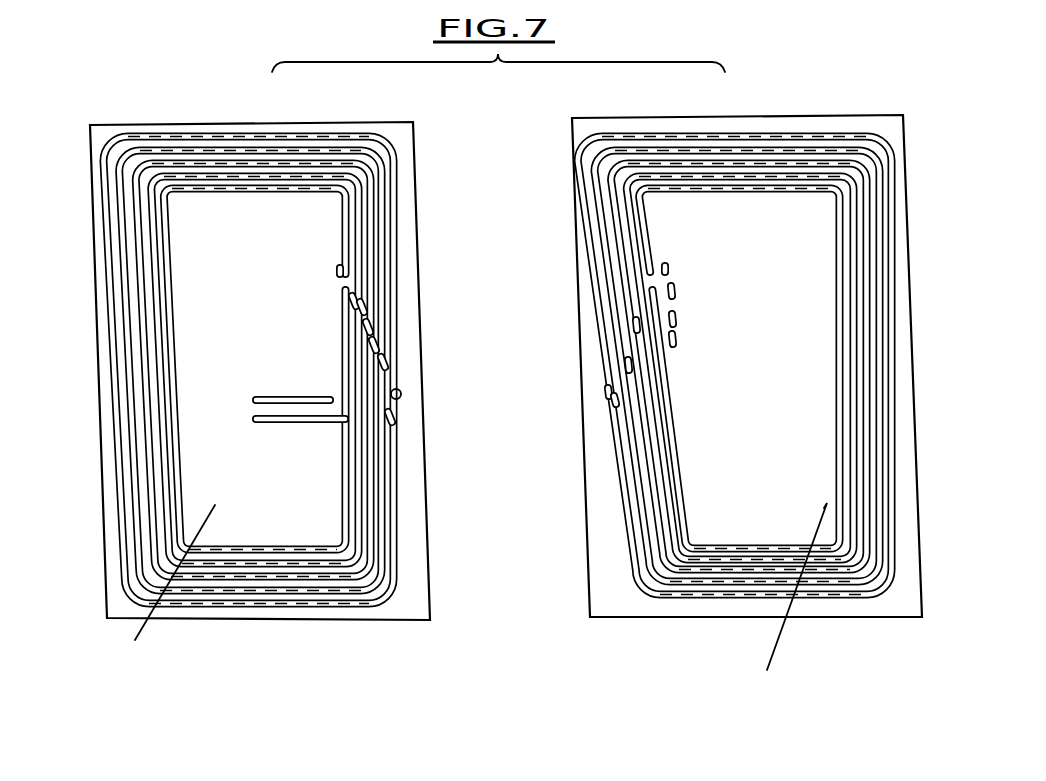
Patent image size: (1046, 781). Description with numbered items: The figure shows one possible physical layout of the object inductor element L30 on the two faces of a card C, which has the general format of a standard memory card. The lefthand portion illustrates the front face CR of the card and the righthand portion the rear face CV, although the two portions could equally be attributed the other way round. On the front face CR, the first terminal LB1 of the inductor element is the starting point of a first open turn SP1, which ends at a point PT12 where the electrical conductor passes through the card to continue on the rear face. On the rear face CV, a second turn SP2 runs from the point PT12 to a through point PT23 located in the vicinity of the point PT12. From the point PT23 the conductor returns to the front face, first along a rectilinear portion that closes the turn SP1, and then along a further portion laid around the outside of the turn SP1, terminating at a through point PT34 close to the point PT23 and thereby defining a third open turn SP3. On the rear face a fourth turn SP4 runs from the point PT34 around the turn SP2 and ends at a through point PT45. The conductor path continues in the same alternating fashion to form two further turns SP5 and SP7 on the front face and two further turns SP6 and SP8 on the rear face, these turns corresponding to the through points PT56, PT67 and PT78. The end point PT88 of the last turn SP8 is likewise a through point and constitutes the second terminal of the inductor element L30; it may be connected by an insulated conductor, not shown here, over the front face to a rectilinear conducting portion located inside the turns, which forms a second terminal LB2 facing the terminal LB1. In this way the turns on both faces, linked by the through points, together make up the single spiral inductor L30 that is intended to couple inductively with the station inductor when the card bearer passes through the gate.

The card C is at (152, 121).
The object inductor element L30 is at (405, 205).
The through point PT12 is at (333, 266).
The through point PT23 is at (349, 294).
The through point PT34 is at (366, 306).
The through point PT45 is at (370, 326).
The through point PT56 is at (374, 348).
The through point PT67 is at (386, 364).
The through point PT78 is at (401, 394).
The end through point PT88 is at (397, 417).
The first terminal LB1 is at (262, 423).
The second terminal LB2 is at (262, 396).
The first turn SP1 is at (352, 510).
The second turn SP2 is at (664, 504).
The third turn SP3 is at (307, 570).
The fourth turn SP4 is at (733, 567).
The fifth turn SP5 is at (237, 578).
The sixth turn SP6 is at (672, 578).
The seventh turn SP7 is at (393, 576).
The eighth turn SP8 is at (845, 592).
The front face CR is at (187, 600).
The rear face CV is at (827, 602).